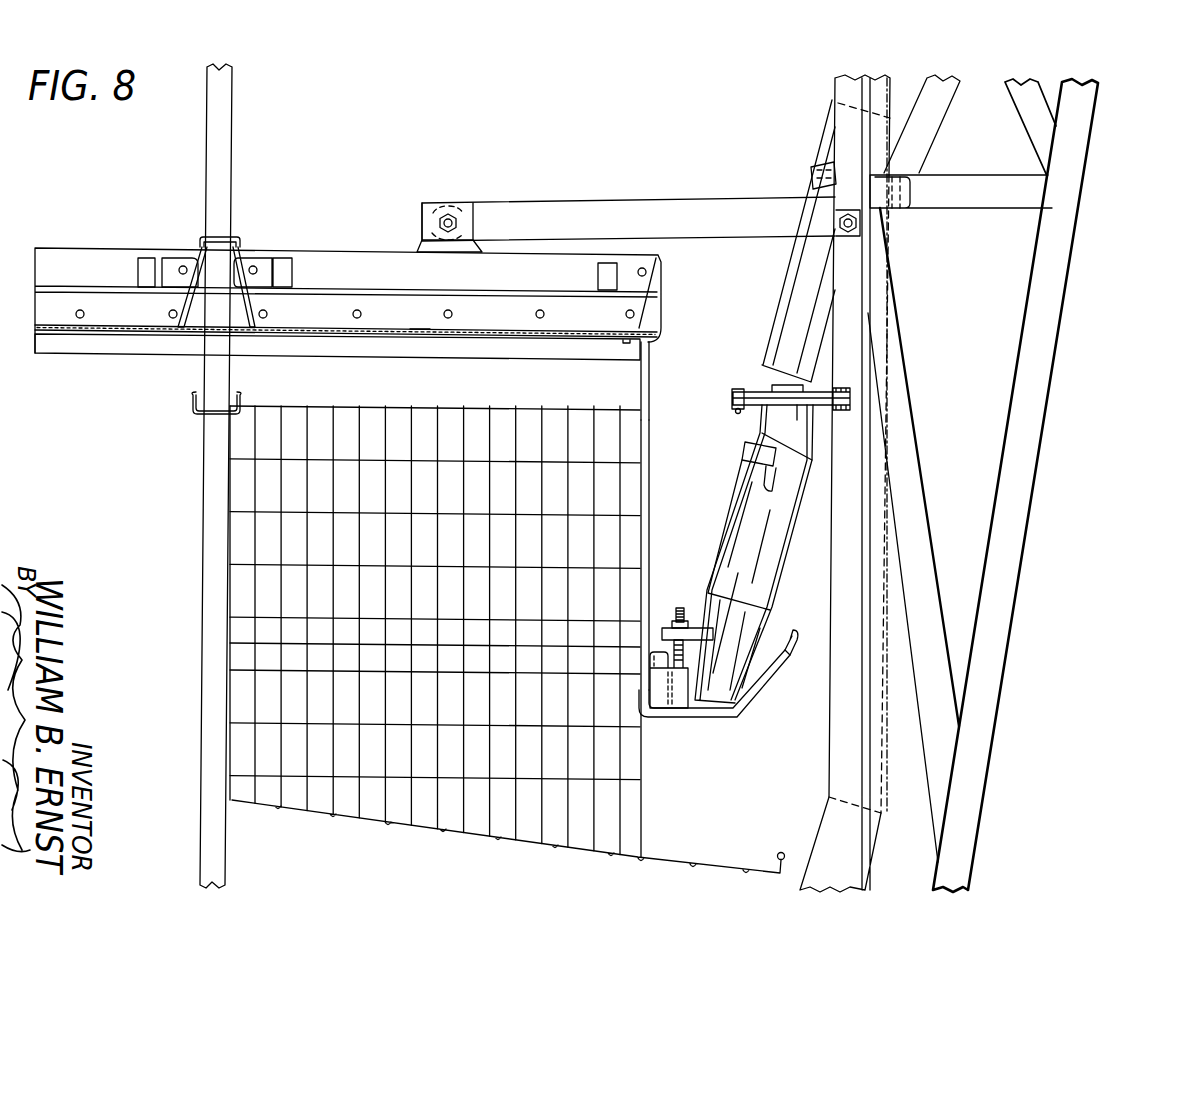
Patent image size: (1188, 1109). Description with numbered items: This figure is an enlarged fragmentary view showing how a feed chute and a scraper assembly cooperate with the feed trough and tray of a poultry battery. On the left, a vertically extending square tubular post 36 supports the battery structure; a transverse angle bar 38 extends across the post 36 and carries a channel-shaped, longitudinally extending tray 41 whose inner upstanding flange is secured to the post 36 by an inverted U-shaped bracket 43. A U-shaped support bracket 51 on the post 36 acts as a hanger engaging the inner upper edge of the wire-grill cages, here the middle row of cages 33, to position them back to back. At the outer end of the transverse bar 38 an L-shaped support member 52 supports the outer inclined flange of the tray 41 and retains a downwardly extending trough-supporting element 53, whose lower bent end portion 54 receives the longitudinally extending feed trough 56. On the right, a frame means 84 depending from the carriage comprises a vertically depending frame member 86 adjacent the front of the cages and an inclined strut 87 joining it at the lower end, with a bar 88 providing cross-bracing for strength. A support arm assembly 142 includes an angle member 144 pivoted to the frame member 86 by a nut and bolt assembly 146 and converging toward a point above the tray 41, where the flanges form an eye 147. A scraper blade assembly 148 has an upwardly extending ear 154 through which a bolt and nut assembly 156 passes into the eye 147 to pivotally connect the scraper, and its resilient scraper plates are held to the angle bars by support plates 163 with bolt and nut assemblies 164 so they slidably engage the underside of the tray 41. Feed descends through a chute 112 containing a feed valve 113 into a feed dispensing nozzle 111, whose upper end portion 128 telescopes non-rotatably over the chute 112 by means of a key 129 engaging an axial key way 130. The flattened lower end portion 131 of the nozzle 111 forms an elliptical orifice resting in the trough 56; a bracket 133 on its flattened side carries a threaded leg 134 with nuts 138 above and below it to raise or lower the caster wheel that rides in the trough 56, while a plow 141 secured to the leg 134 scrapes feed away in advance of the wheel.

The middle row of cages 33 is at (260, 596).
The post 36 is at (213, 488).
The transverse angle bar 38 is at (395, 350).
The tray 41 is at (418, 328).
The inverted U-shaped bracket 43 is at (213, 231).
The U-shaped support bracket 51 is at (190, 405).
The L-shaped support member 52 is at (660, 328).
The trough-supporting element 53 is at (646, 540).
The lower bent end portion 54 is at (703, 718).
The feed trough 56 is at (792, 633).
The frame means 84 is at (1088, 241).
The frame member 86 is at (858, 440).
The inclined strut 87 is at (1030, 460).
The cross-bracing bar 88 is at (957, 202).
The feed dispensing nozzle 111 is at (715, 522).
The chute 112 is at (790, 294).
The feed valve 113 is at (729, 379).
The upper end portion of nozzle 128 is at (752, 510).
The key 129 is at (775, 480).
The key way 130 is at (773, 462).
The lower end portion of nozzle 131 is at (745, 682).
The bracket 133 is at (668, 628).
The leg 134 is at (683, 606).
The nut 138 is at (690, 641).
The plow 141 is at (678, 700).
The support arm assembly 142 is at (590, 193).
The angle member 144 is at (636, 206).
The nut and bolt assembly 146 is at (855, 224).
The eye 147 is at (453, 208).
The scraper blade assembly 148 is at (337, 240).
The ear 154 is at (420, 250).
The bolt and nut assembly 156 is at (440, 222).
The support plate 163 is at (514, 324).
The bolt and nut assembly 164 is at (626, 314).